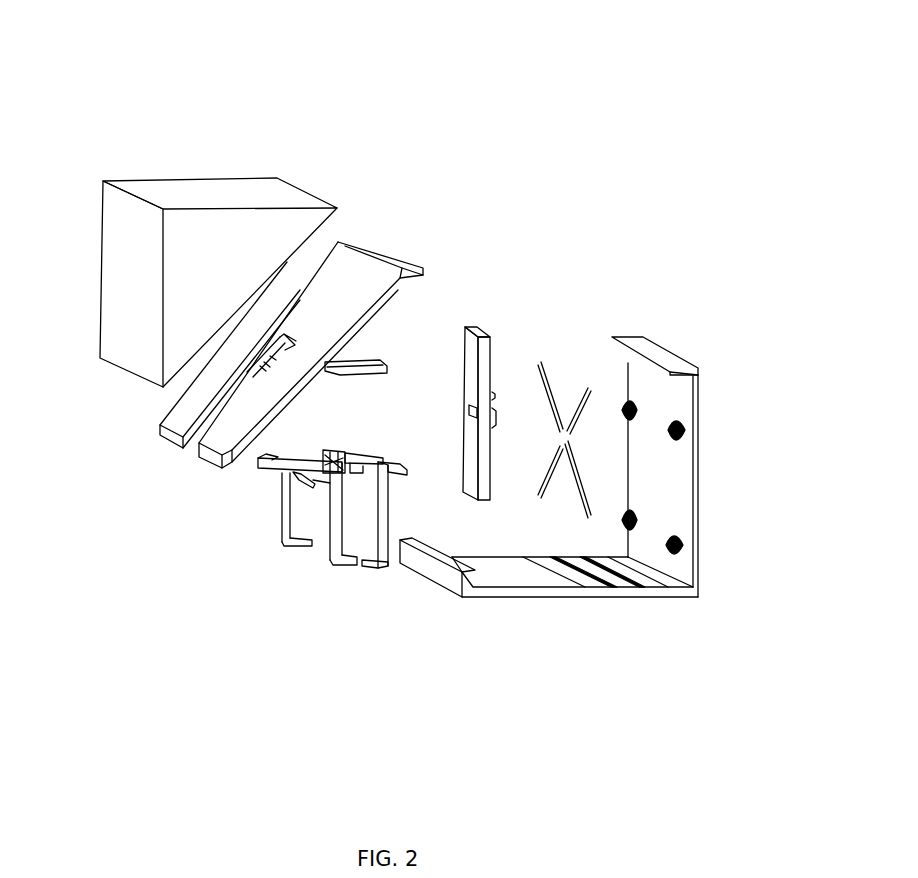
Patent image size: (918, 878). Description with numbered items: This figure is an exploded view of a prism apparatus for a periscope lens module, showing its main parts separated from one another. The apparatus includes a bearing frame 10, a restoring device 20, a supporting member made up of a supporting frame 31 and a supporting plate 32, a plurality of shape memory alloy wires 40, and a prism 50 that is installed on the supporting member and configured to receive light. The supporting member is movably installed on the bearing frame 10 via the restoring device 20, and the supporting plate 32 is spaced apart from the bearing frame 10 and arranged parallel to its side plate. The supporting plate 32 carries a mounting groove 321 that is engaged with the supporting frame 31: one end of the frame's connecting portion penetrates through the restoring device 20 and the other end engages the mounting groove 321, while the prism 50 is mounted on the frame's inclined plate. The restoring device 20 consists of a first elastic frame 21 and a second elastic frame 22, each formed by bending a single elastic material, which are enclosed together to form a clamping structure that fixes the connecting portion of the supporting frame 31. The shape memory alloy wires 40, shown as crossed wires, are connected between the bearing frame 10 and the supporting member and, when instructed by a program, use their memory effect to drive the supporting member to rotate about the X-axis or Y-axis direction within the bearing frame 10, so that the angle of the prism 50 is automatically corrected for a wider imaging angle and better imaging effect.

The bearing frame 10 is at (668, 513).
The restoring device 20 is at (322, 594).
The first elastic frame 21 is at (283, 527).
The second elastic frame 22 is at (380, 548).
The supporting frame 31 is at (188, 415).
The supporting plate 32 is at (519, 329).
The mounting groove 321 is at (473, 353).
The shape memory alloy wires 40 is at (553, 390).
The prism 50 is at (190, 195).